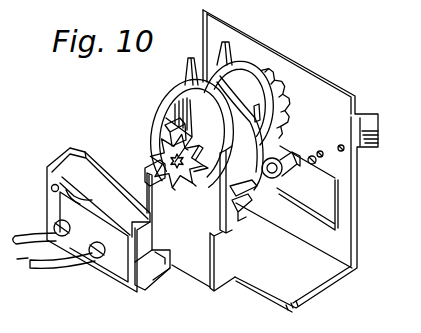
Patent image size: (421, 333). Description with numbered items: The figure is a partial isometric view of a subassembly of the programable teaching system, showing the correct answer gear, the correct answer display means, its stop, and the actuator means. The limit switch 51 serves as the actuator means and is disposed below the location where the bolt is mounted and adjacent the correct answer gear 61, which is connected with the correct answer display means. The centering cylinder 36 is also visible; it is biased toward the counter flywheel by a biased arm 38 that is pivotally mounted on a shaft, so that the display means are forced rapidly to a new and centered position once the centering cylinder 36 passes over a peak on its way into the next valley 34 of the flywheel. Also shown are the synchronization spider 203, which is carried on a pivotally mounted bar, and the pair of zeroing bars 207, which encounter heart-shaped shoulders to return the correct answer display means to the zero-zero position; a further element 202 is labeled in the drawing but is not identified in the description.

The valley 34 is at (293, 121).
The synchronization spider 203 is at (234, 214).
The zeroing bars 207 is at (186, 62).
The correct answer gear 61 is at (158, 153).
The centering cylinder 36 is at (297, 177).
The biased arm 38 is at (312, 161).
The limit switch 51 is at (113, 258).
The base 202 is at (134, 328).